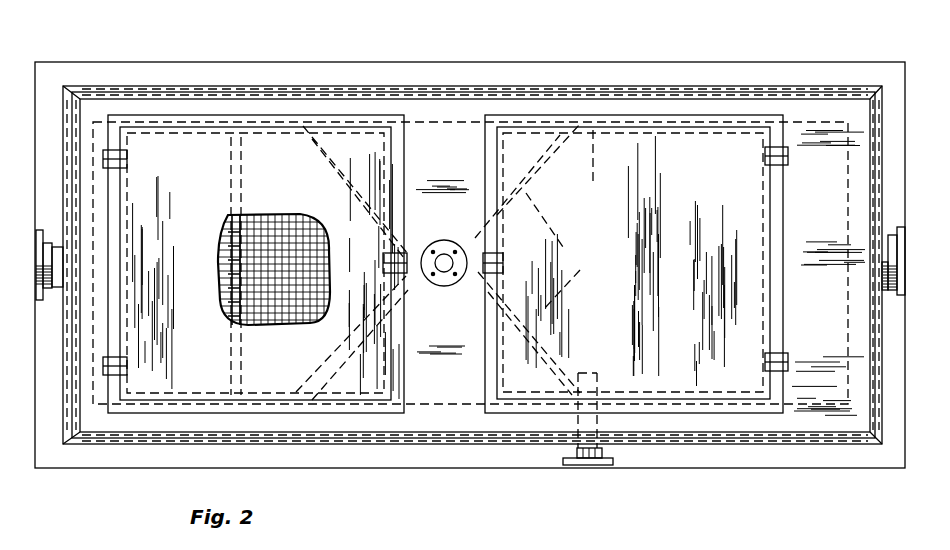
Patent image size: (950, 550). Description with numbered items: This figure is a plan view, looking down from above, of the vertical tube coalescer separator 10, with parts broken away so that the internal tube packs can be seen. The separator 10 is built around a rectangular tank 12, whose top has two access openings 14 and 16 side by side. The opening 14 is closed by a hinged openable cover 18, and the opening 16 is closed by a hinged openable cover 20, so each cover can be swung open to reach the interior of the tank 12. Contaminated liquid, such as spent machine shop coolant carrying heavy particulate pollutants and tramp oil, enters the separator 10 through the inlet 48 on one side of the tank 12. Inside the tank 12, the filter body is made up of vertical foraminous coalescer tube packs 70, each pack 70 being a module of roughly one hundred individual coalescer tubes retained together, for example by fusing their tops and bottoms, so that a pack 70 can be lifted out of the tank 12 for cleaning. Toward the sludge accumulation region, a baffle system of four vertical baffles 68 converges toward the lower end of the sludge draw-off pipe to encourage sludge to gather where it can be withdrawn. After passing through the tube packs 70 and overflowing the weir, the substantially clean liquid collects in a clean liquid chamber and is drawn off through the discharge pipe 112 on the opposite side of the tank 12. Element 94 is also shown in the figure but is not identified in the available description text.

The vertical tube coalescer separator 10 is at (292, 53).
The rectangular tank 12 is at (157, 62).
The top access opening 14 is at (258, 136).
The top access opening 16 is at (633, 261).
The hinged openable cover 18 is at (366, 145).
The hinged openable cover 20 is at (613, 140).
The inlet 48 is at (40, 240).
The vertical baffles 68 is at (412, 206).
The coalescer tube pack 70 is at (262, 246).
The bottom latch 94 is at (590, 465).
The discharge pipe 112 is at (895, 289).